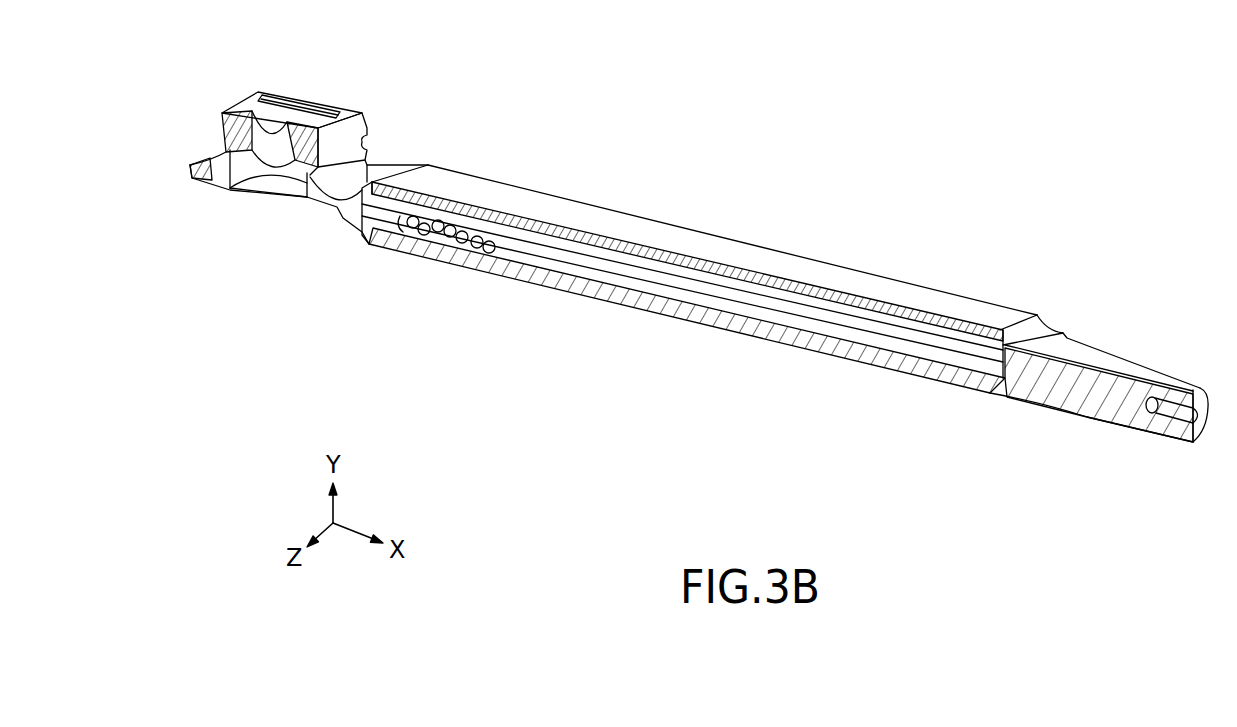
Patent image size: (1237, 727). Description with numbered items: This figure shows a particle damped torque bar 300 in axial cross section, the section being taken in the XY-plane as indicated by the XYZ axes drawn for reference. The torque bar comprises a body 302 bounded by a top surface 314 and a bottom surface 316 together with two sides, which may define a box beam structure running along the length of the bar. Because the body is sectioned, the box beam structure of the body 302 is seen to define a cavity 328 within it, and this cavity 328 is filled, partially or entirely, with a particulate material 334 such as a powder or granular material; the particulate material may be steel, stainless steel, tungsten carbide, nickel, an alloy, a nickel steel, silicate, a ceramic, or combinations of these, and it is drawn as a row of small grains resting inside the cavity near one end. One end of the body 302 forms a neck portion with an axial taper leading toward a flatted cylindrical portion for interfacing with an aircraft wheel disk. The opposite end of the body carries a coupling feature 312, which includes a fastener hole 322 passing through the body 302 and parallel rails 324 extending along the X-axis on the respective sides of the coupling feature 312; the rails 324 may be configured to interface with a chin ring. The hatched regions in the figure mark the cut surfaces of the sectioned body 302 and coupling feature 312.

The particle damped torque bar 300 is at (699, 228).
The body 302 is at (785, 303).
The coupling feature 312 is at (316, 129).
The top surface 314 is at (950, 300).
The bottom surface 316 is at (768, 334).
The fastener hole 322 is at (277, 116).
The rails 324 is at (369, 140).
The cavity 328 is at (716, 300).
The particulate material 334 is at (412, 226).